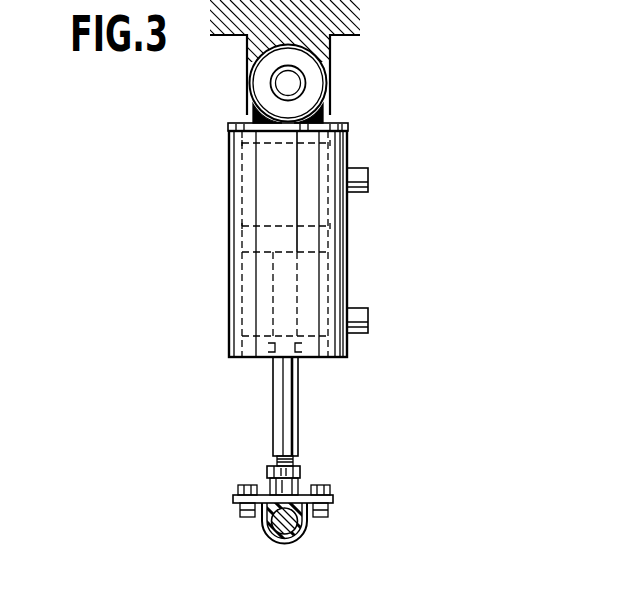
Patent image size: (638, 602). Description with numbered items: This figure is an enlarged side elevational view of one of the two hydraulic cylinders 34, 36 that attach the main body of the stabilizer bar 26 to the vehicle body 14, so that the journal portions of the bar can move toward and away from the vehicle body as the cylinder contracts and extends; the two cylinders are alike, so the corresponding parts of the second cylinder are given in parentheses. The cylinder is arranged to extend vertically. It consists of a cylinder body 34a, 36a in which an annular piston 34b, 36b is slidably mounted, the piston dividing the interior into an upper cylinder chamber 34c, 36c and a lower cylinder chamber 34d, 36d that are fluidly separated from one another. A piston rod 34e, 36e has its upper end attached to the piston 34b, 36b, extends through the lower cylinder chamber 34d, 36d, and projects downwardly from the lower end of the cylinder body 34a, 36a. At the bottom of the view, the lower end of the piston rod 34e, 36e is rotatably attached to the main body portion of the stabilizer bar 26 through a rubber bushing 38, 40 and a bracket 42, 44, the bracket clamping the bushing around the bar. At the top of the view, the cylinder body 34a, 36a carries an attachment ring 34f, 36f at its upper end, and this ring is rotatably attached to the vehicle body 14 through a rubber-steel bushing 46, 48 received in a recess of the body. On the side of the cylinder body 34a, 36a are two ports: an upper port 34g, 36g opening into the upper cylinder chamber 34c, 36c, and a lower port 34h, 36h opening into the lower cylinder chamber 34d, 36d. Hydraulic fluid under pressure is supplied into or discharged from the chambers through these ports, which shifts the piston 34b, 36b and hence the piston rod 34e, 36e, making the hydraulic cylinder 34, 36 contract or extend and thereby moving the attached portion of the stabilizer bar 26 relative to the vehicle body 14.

The vehicle body 14 is at (352, 22).
The rubber-steel bushing 46 is at (338, 84).
The rubber-steel bushing 48 is at (308, 91).
The hydraulic cylinder 34 is at (309, 294).
The hydraulic cylinder 36 is at (309, 294).
The cylinder body 34a is at (232, 244).
The cylinder body 36a is at (229, 166).
The annular piston 34b is at (360, 188).
The annular piston 36b is at (347, 225).
The upper cylinder chamber 34c is at (221, 244).
The upper cylinder chamber 36c is at (250, 205).
The lower cylinder chamber 34d is at (360, 302).
The lower cylinder chamber 36d is at (315, 292).
The piston rod 34e is at (350, 406).
The piston rod 36e is at (298, 411).
The attachment ring 34f is at (211, 294).
The attachment ring 36f is at (251, 93).
The port 34g is at (423, 180).
The port 36g is at (368, 181).
The port 34h is at (425, 321).
The port 36h is at (368, 321).
The rubber bushing 38 is at (319, 521).
The rubber bushing 40 is at (296, 532).
The bracket 42 is at (270, 535).
The bracket 44 is at (265, 535).
The stabilizer bar 26 is at (291, 538).